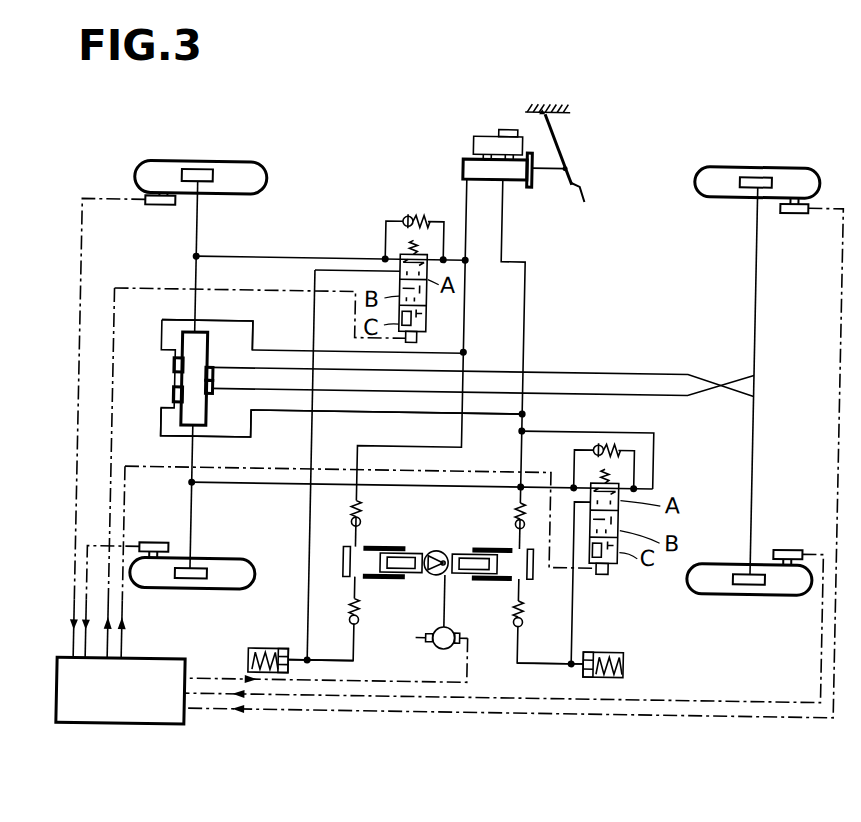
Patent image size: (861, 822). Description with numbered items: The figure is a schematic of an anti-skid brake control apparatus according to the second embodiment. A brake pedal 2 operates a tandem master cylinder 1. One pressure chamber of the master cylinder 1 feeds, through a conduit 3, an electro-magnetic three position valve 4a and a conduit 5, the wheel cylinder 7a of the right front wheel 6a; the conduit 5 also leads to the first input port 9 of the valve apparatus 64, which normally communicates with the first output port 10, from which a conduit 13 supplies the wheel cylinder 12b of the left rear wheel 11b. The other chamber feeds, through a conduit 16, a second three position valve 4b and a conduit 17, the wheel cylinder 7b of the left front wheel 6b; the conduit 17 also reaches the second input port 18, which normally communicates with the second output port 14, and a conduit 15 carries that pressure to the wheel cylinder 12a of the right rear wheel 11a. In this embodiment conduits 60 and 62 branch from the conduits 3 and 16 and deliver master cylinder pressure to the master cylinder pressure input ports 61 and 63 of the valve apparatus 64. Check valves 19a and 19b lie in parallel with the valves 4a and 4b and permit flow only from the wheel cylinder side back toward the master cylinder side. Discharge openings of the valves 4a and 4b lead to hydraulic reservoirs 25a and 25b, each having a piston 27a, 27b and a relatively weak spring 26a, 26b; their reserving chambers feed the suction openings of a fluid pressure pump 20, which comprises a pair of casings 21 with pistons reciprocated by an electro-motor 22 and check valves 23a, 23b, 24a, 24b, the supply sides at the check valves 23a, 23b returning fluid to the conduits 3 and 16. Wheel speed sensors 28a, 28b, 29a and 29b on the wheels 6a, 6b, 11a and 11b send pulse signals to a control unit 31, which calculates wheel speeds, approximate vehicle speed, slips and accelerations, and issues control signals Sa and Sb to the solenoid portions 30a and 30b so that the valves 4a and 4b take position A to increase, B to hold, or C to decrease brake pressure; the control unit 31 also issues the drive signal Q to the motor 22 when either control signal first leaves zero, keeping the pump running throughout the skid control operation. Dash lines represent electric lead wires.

The tandem master cylinder 1 is at (484, 122).
The brake pedal 2 is at (575, 184).
The conduit 3 is at (460, 205).
The electro-magnetic three position valve 4a is at (426, 305).
The electro-magnetic three position valve 4b is at (622, 520).
The conduit 5 is at (300, 259).
The right front wheel 6a is at (240, 171).
The left front wheel 6b is at (250, 566).
The wheel cylinder 7a is at (196, 172).
The wheel cylinder 7b is at (186, 583).
The first input port 9 is at (189, 336).
The first output port 10 is at (214, 372).
The right rear wheel 11a is at (726, 172).
The left rear wheel 11b is at (718, 590).
The wheel cylinder 12a is at (757, 173).
The wheel cylinder 12b is at (760, 582).
The conduit 13 is at (562, 371).
The second output port 14 is at (214, 396).
The conduit 15 is at (563, 393).
The conduit 16 is at (500, 228).
The conduit 17 is at (243, 488).
The second input port 18 is at (191, 432).
The check valve 19a is at (402, 217).
The check valve 19b is at (594, 447).
The fluid pressure pump 20 is at (443, 554).
The casing 21 is at (394, 580).
The electro-motor 22 is at (438, 648).
The check valve 23a is at (518, 526).
The check valve 23b is at (364, 526).
The check valve 24a is at (526, 614).
The check valve 24b is at (356, 614).
The hydraulic reservoir 25a is at (258, 652).
The hydraulic reservoir 25b is at (612, 651).
The spring 26a is at (253, 661).
The spring 26b is at (630, 661).
The piston 27a is at (287, 650).
The piston 27b is at (594, 650).
The wheel speed sensor 28a is at (158, 210).
The wheel speed sensor 28b is at (152, 547).
The wheel speed sensor 29a is at (790, 209).
The wheel speed sensor 29b is at (790, 545).
The solenoid portion 30a is at (417, 343).
The solenoid portion 30b is at (613, 568).
The control unit 31 is at (126, 730).
The conduit 60 is at (270, 353).
The master cylinder pressure input port 61 is at (165, 346).
The conduit 62 is at (262, 414).
The master cylinder pressure input port 63 is at (170, 400).
The valve apparatus 64 is at (173, 369).
The control signal Sa is at (114, 448).
The control signal Sb is at (329, 471).
The drive signal Q is at (373, 681).